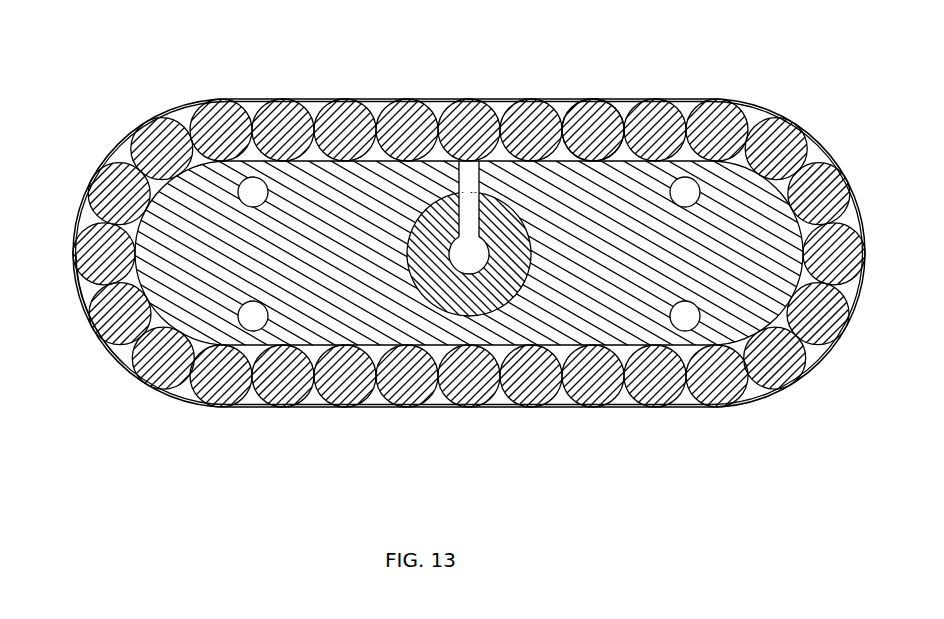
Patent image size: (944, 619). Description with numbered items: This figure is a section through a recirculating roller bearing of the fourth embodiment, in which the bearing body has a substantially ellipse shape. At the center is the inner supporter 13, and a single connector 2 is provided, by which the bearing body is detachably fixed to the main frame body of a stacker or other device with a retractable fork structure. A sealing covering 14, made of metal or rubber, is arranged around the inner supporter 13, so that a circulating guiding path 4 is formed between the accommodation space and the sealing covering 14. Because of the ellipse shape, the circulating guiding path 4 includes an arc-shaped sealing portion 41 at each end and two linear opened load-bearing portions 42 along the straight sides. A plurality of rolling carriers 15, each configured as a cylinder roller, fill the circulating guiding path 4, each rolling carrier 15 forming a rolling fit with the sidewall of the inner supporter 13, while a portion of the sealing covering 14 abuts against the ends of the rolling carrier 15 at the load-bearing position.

The connector 2 is at (486, 300).
The circulating guiding path 4 is at (312, 403).
The inner supporter 13 is at (212, 323).
The sealing covering 14 is at (757, 107).
The rolling carrier 15 is at (600, 117).
The sealing portion 41 is at (122, 363).
The opened load-bearing portion 42 is at (388, 97).